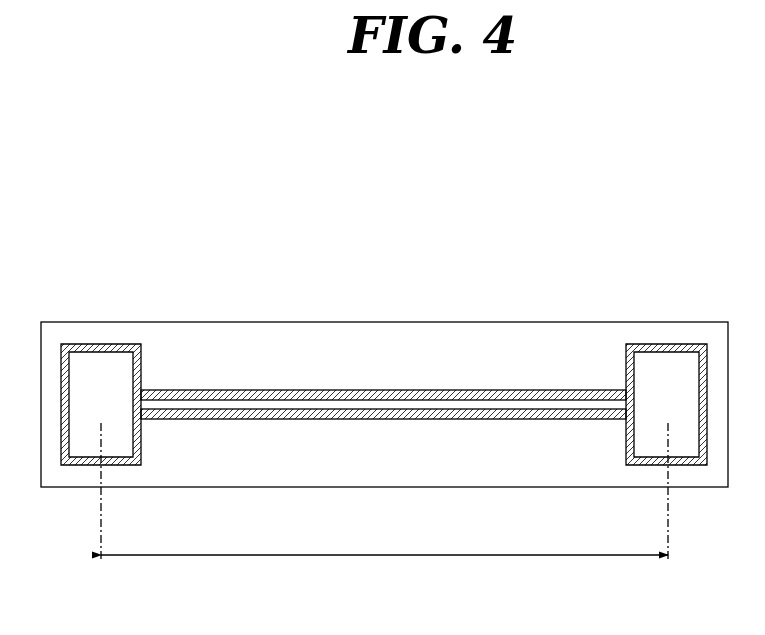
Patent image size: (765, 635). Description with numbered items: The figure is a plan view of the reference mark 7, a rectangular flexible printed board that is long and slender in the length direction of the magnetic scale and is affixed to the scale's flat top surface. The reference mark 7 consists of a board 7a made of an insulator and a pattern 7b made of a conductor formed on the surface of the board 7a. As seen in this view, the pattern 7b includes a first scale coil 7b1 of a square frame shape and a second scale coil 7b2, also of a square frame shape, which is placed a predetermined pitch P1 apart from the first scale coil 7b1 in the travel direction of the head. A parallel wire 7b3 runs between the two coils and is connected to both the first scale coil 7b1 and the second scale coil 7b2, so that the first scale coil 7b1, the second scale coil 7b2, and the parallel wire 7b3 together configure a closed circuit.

The reference mark 7 is at (384, 323).
The board 7a is at (288, 345).
The pattern 7b is at (390, 351).
The first scale coil 7b1 is at (90, 346).
The second scale coil 7b2 is at (662, 346).
The parallel wire 7b3 is at (475, 417).
The pitch P1 is at (384, 492).